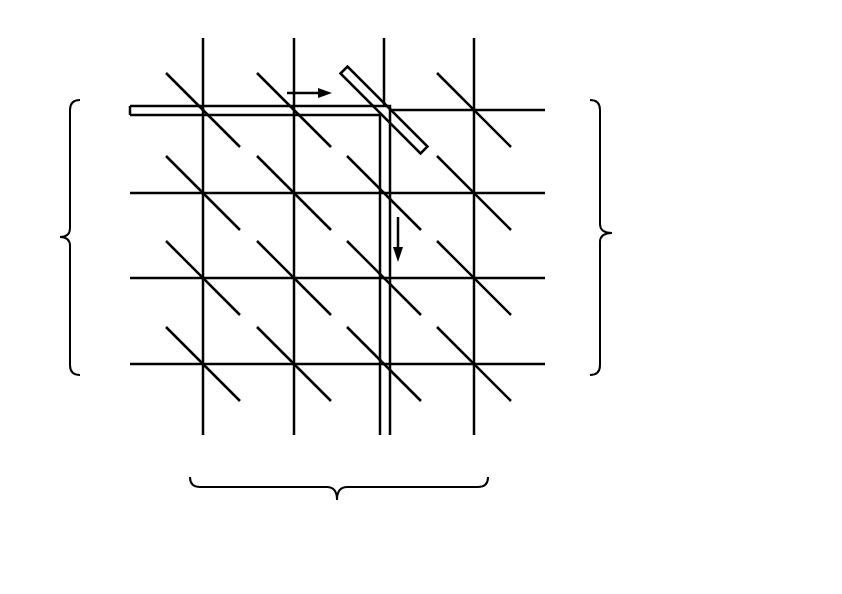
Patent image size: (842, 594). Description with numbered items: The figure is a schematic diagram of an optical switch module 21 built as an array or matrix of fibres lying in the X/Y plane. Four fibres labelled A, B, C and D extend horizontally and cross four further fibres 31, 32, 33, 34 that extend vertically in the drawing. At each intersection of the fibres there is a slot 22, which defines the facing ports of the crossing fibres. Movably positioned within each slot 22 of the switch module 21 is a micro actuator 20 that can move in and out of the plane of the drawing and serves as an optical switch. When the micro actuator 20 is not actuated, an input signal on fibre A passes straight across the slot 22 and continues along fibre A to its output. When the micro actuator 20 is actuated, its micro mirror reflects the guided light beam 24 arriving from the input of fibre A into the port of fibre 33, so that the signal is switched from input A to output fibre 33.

The micro actuator 20 is at (358, 72).
The optical switch module 21 is at (643, 291).
The slot 22 is at (207, 118).
The guided light beam 24 is at (142, 104).
The fibre 31 is at (208, 255).
The fibre 32 is at (299, 255).
The fibre 33 is at (391, 255).
The fibre 34 is at (481, 255).